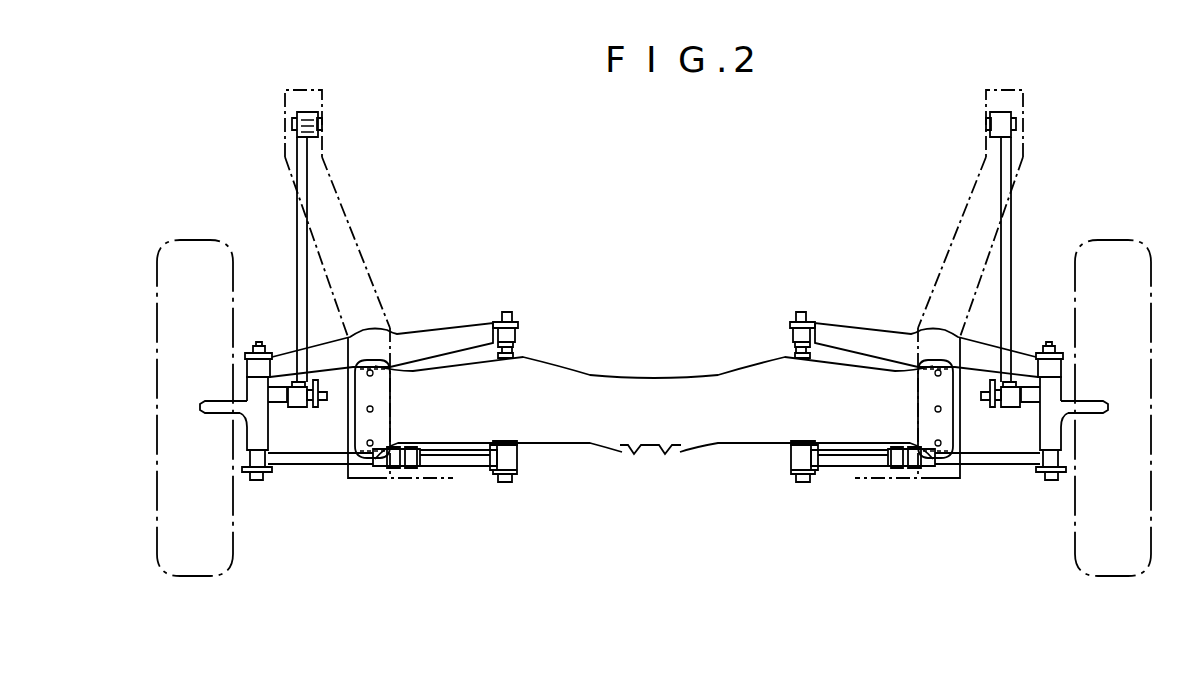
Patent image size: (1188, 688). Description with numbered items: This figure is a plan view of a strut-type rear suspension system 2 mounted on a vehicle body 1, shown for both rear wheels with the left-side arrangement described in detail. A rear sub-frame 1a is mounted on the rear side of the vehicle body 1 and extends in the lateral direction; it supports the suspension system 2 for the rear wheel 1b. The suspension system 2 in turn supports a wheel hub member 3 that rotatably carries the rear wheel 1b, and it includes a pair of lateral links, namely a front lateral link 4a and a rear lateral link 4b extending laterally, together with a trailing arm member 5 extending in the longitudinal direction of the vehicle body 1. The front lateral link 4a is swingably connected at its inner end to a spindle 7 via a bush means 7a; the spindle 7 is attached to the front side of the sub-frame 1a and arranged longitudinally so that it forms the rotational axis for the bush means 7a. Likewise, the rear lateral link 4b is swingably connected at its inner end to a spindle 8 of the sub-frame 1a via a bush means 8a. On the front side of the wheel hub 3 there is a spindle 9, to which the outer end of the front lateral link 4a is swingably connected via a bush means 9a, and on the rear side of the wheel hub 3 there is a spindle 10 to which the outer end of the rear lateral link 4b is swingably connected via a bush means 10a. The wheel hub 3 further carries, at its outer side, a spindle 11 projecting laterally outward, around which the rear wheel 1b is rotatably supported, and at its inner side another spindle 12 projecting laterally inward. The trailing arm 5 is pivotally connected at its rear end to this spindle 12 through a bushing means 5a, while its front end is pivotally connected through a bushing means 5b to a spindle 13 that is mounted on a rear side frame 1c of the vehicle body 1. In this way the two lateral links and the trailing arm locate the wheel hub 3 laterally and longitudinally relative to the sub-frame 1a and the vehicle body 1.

The vehicle body 1 is at (372, 482).
The rear sub-frame 1a is at (614, 377).
The rear wheel 1b is at (150, 422).
The rear side frame 1c is at (290, 187).
The rear suspension system 2 is at (395, 258).
The wheel hub member 3 is at (247, 388).
The front lateral link 4a is at (423, 333).
The rear lateral link 4b is at (467, 467).
The trailing arm member 5 is at (308, 181).
The bushing means 5a is at (298, 407).
The bushing means 5b is at (300, 112).
The spindle 7 is at (512, 316).
The bush means 7a is at (518, 332).
The spindle 8 is at (507, 484).
The bush means 8a is at (517, 457).
The spindle 9 is at (259, 346).
The bush means 9a is at (258, 368).
The spindle 10 is at (254, 486).
The bush means 10a is at (250, 455).
The spindle 11 is at (212, 414).
The spindle 12 is at (330, 403).
The spindle 13 is at (320, 128).